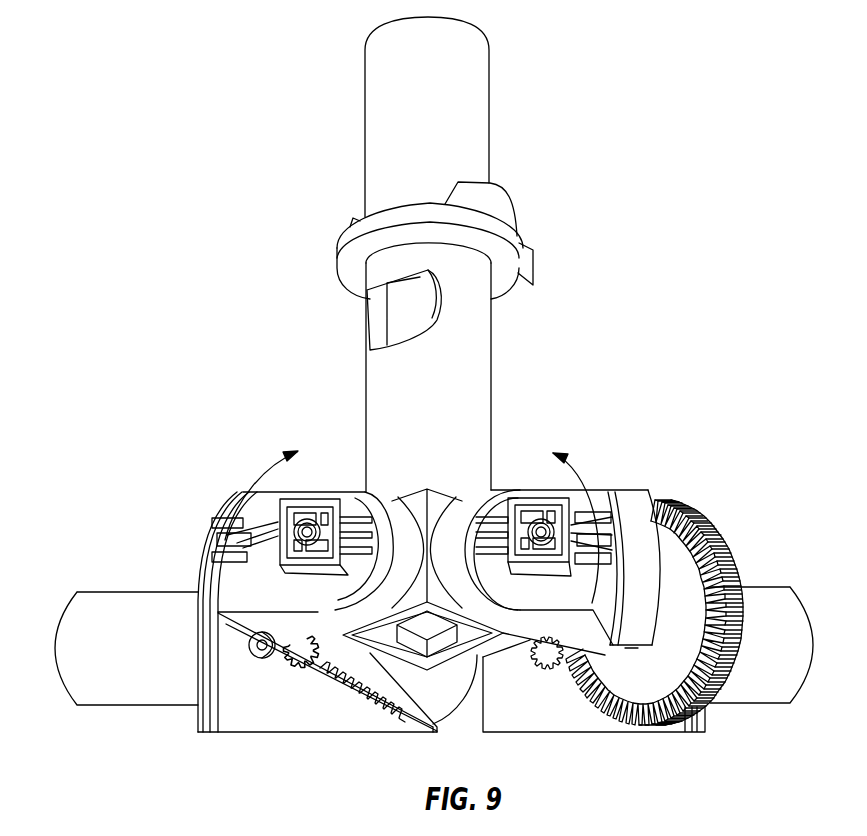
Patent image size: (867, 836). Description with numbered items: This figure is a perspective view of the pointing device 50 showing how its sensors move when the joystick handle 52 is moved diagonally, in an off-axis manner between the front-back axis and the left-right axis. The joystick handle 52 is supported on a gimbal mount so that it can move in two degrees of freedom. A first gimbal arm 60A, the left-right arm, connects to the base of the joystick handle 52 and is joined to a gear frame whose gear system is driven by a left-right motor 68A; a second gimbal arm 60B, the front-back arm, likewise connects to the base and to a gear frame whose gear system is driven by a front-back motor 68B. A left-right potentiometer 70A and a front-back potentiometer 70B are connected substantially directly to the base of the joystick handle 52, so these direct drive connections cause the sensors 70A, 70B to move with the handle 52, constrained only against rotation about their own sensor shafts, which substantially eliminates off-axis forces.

The pointing device 50 is at (650, 128).
The joystick handle 52 is at (489, 100).
The first gimbal arm 60A is at (632, 490).
The second gimbal arm 60B is at (243, 492).
The left-right motor 68A is at (752, 587).
The front-back motor 68B is at (120, 592).
The left-right potentiometer 70A is at (318, 500).
The front-back potentiometer 70B is at (519, 500).